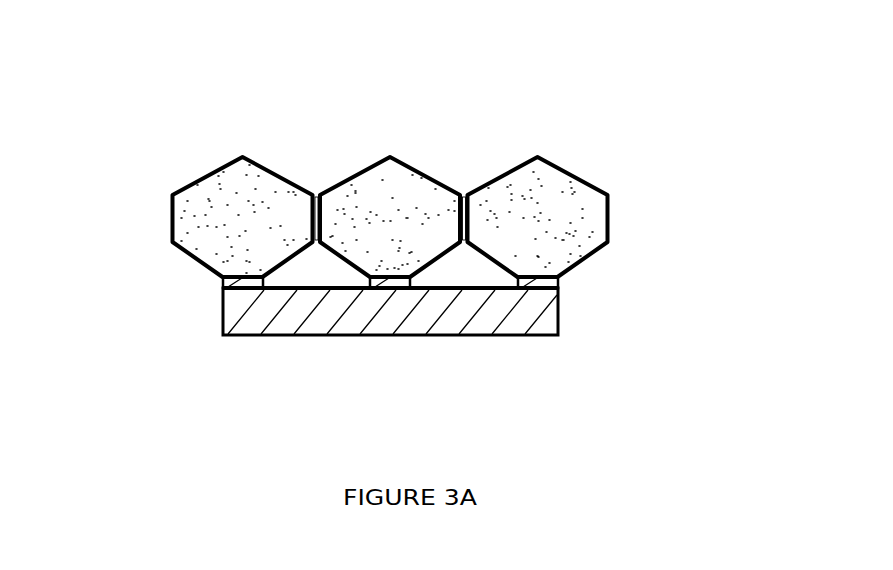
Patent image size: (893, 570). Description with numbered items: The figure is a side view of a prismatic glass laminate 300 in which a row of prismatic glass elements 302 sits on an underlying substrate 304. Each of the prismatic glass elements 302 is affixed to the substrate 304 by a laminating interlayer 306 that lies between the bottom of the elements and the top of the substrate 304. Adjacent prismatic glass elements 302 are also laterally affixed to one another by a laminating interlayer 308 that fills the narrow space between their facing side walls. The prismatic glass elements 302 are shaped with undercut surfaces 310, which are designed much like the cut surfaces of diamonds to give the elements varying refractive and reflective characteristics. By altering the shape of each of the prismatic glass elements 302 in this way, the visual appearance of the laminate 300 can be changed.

The prismatic glass laminate 300 is at (122, 82).
The prismatic glass elements 302 is at (578, 175).
The substrate 304 is at (223, 317).
The laminating interlayer 306 is at (558, 285).
The laminating interlayer 308 is at (316, 193).
The undercut surfaces 310 is at (195, 263).